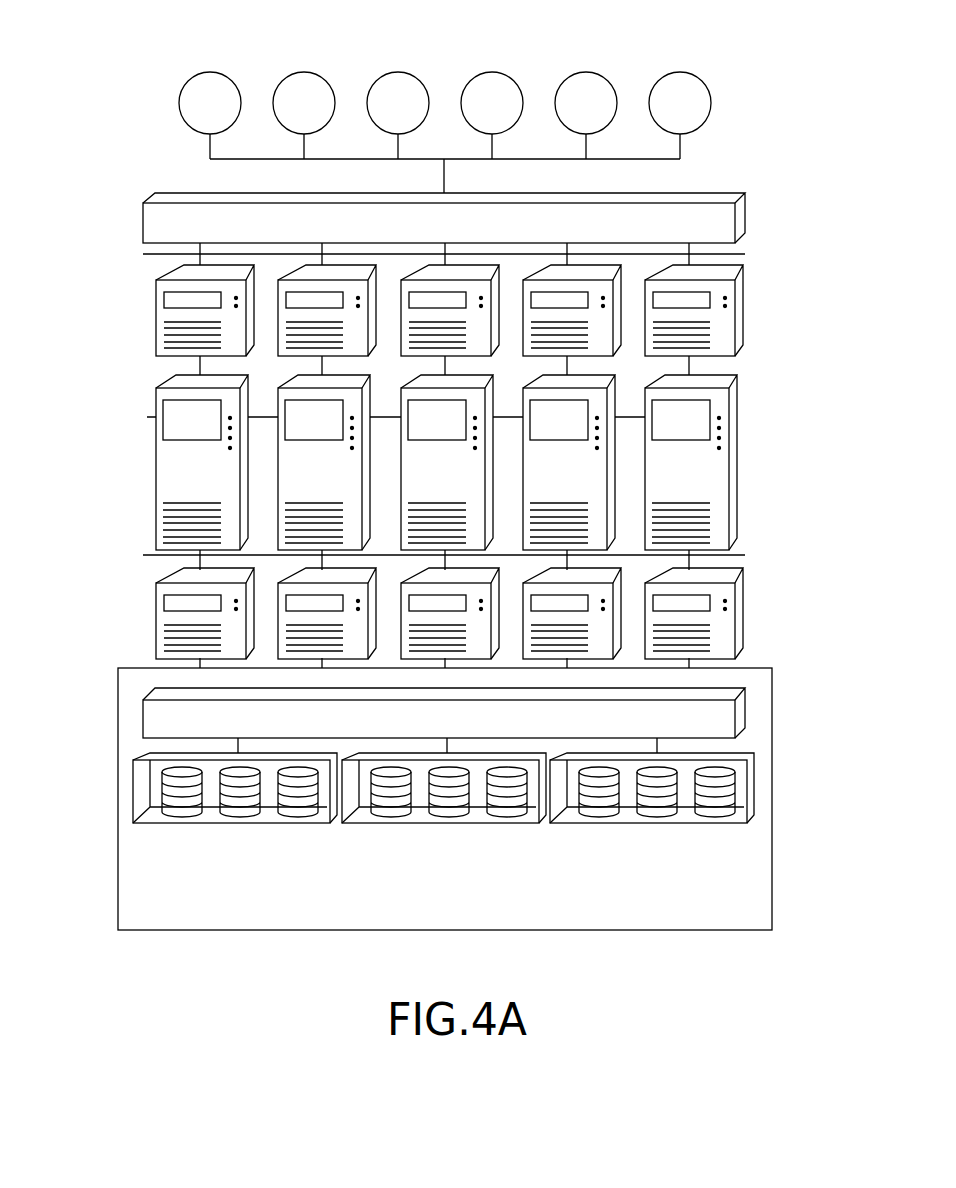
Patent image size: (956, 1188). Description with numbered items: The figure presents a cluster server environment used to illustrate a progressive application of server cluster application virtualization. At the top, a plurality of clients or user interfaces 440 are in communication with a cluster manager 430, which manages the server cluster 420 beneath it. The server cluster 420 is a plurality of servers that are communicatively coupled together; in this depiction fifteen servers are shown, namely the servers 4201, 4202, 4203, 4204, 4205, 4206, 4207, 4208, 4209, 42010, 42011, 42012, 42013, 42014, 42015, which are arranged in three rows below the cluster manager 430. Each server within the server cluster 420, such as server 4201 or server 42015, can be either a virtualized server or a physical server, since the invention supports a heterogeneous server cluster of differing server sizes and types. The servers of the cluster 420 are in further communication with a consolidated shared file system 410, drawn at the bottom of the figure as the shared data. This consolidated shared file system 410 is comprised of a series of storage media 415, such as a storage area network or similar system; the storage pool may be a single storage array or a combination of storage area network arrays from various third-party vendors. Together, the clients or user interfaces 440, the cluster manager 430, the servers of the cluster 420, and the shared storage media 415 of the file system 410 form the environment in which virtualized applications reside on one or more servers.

The clients or user interfaces 440 is at (728, 52).
The cluster manager 430 is at (747, 205).
The server cluster 420 is at (72, 283).
The server 4201 is at (157, 306).
The server 4202 is at (317, 285).
The server 4203 is at (480, 288).
The server 4204 is at (598, 284).
The server 4205 is at (745, 305).
The server 4206 is at (156, 460).
The server 4207 is at (324, 462).
The server 4208 is at (447, 462).
The server 4209 is at (569, 462).
The server 42010 is at (738, 441).
The server 42011 is at (156, 612).
The server 42012 is at (327, 613).
The server 42013 is at (522, 595).
The server 42014 is at (617, 628).
The server 42015 is at (745, 596).
The consolidated shared file system 410 is at (118, 833).
The storage media 415 is at (705, 833).